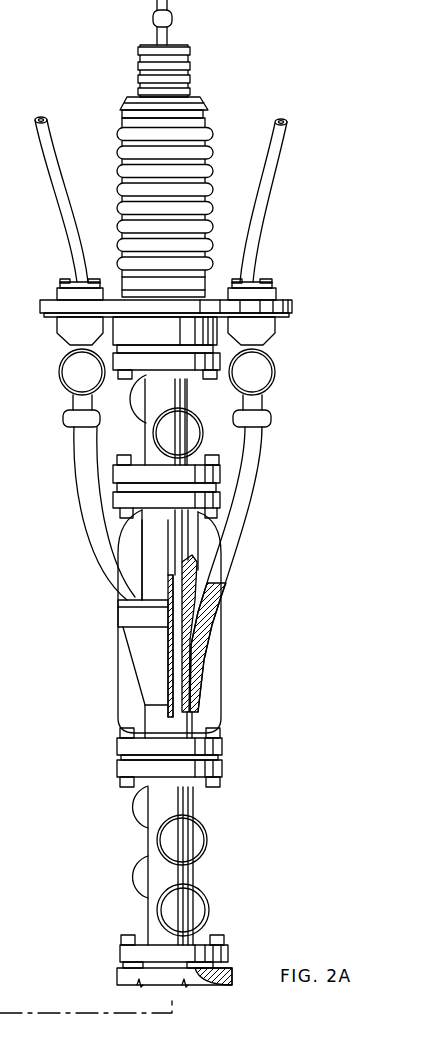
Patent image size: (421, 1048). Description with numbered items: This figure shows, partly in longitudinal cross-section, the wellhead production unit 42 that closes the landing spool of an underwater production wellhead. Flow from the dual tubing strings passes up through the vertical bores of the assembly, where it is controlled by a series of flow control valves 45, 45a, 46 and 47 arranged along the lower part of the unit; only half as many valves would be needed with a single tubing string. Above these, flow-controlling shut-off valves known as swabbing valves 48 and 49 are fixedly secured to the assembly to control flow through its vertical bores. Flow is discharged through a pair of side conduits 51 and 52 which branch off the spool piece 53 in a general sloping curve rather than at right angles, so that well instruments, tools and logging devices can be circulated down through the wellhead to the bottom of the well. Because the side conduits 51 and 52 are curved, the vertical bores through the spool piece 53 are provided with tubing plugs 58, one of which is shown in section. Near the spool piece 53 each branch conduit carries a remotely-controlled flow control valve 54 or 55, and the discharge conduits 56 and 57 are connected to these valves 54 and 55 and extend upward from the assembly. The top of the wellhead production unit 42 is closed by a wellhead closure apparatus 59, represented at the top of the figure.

The wellhead production unit 42 is at (238, 686).
The flow control valve 45 is at (200, 905).
The flow control valve 45a is at (200, 837).
The flow control valve 46 is at (141, 805).
The flow control valve 47 is at (137, 873).
The swabbing valve 48 is at (138, 412).
The swabbing valve 49 is at (184, 414).
The side conduit 51 is at (82, 508).
The side conduit 52 is at (253, 500).
The spool piece 53 is at (153, 548).
The remotely-controlled flow control valve 54 is at (66, 379).
The remotely-controlled flow control valve 55 is at (268, 373).
The conduit 56 is at (57, 189).
The conduit 57 is at (270, 176).
The tubing plug 58 is at (178, 602).
The wellhead closure apparatus 59 is at (203, 137).